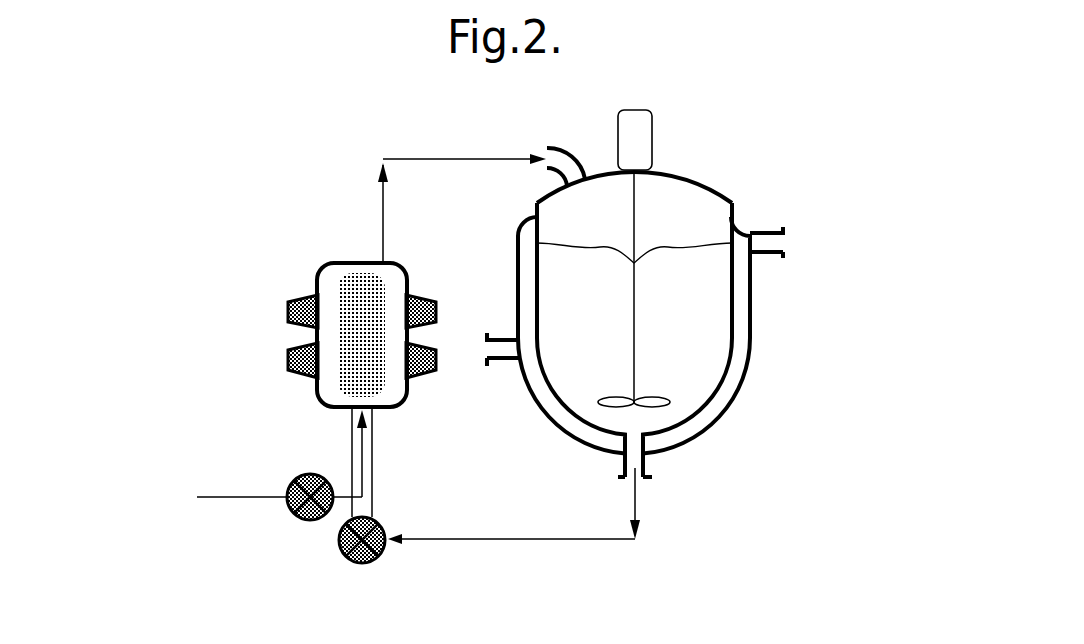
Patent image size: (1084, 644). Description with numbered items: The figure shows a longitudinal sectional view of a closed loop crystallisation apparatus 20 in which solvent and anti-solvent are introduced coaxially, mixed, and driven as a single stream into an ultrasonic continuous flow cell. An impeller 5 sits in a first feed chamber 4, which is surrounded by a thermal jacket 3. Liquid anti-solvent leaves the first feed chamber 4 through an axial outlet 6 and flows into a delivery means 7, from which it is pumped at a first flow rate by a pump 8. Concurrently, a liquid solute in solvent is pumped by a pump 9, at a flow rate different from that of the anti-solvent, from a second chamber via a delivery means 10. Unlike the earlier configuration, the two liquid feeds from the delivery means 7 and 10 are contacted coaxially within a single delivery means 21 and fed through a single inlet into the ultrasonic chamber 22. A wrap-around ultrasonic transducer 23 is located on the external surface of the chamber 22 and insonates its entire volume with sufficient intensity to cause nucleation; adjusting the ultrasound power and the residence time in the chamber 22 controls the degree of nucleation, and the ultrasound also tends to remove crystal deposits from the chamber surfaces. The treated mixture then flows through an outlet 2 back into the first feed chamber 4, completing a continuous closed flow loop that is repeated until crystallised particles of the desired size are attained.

The outlet 2 is at (468, 157).
The thermal jacket 3 is at (740, 285).
The first feed chamber 4 is at (753, 335).
The impeller 5 is at (635, 370).
The axial outlet 6 is at (652, 463).
The delivery means 7 is at (512, 540).
The pump 8 is at (360, 563).
The pump 9 is at (305, 519).
The delivery means 10 is at (227, 497).
The closed loop crystallisation apparatus 20 is at (290, 181).
The single delivery means 21 is at (352, 437).
The chamber 22 is at (332, 263).
The wrap-around ultrasonic transducer 23 is at (293, 322).